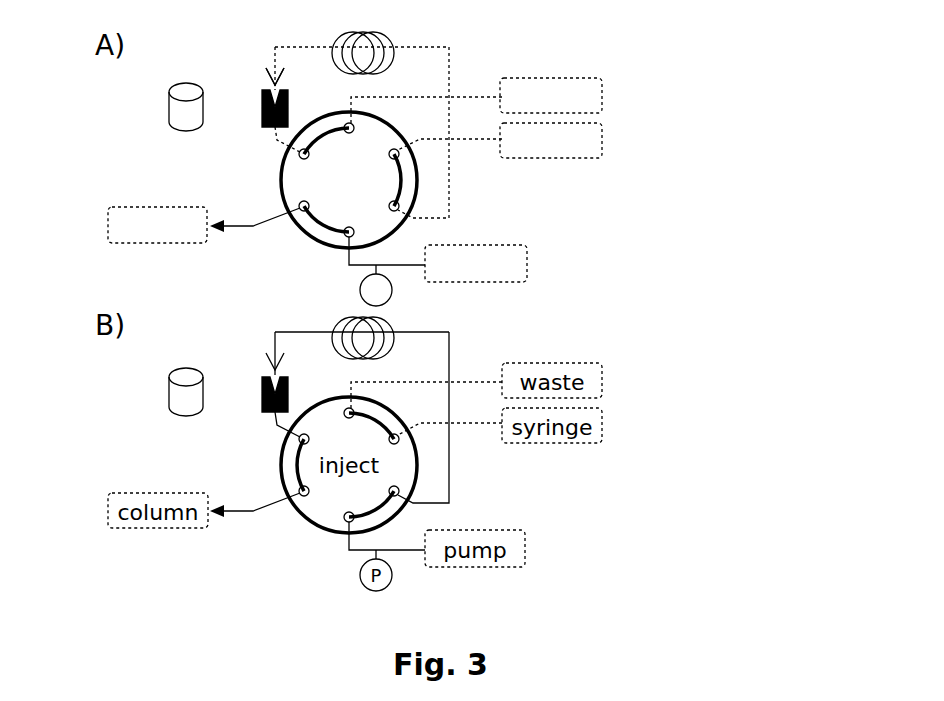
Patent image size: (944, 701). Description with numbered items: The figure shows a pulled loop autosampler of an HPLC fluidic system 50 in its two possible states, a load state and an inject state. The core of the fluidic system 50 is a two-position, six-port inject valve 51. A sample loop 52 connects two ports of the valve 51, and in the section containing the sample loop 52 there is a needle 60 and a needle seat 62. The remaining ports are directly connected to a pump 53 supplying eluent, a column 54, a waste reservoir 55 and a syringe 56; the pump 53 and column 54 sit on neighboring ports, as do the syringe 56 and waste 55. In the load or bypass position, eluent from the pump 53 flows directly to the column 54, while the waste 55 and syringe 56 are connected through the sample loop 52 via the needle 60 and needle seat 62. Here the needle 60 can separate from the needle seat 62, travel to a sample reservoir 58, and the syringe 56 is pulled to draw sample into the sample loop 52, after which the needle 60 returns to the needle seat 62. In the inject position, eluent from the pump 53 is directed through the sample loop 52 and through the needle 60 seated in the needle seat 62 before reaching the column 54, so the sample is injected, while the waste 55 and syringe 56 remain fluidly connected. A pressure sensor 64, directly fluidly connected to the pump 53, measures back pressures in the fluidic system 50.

The fluidic system 50 is at (737, 137).
The inject valve 51 is at (295, 239).
The sample loop 52 is at (398, 35).
The pump 53 is at (531, 255).
The column 54 is at (106, 220).
The waste reservoir 55 is at (607, 83).
The syringe 56 is at (610, 153).
The sample reservoir 58 is at (158, 110).
The needle 60 is at (261, 73).
The needle seat 62 is at (258, 123).
The pressure sensor 64 is at (346, 290).